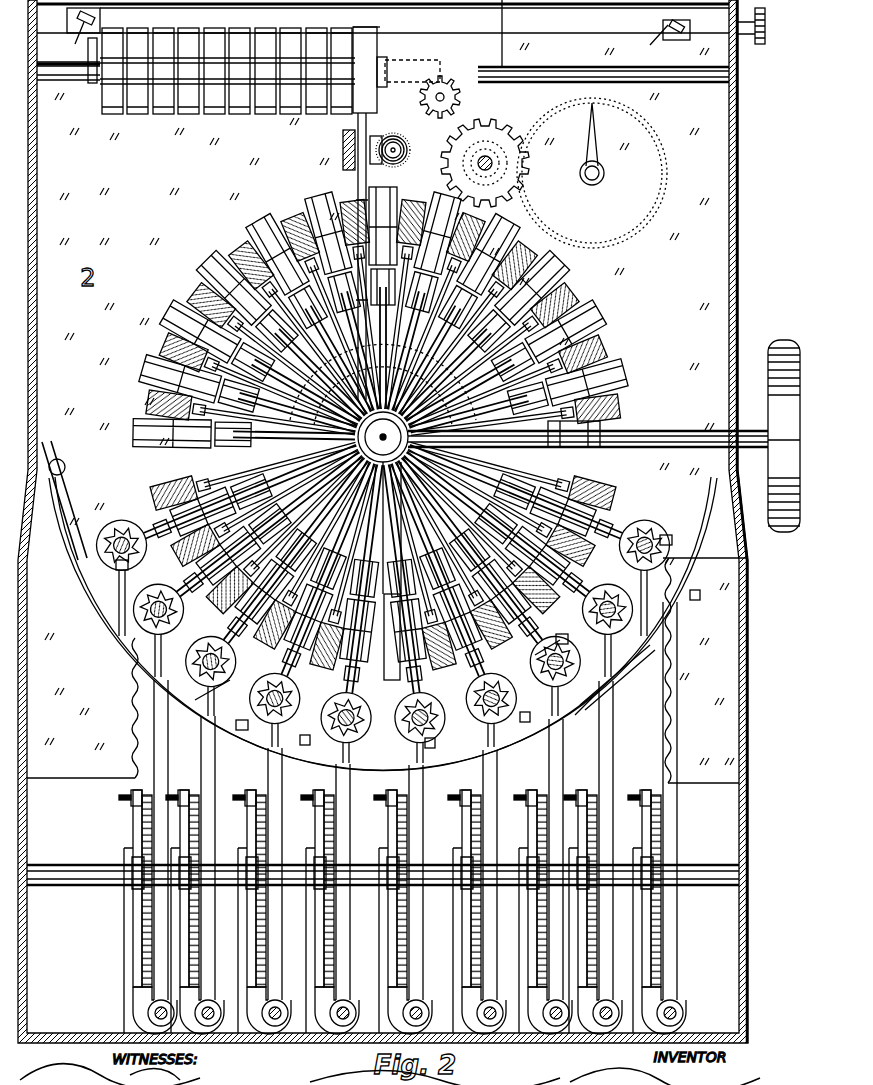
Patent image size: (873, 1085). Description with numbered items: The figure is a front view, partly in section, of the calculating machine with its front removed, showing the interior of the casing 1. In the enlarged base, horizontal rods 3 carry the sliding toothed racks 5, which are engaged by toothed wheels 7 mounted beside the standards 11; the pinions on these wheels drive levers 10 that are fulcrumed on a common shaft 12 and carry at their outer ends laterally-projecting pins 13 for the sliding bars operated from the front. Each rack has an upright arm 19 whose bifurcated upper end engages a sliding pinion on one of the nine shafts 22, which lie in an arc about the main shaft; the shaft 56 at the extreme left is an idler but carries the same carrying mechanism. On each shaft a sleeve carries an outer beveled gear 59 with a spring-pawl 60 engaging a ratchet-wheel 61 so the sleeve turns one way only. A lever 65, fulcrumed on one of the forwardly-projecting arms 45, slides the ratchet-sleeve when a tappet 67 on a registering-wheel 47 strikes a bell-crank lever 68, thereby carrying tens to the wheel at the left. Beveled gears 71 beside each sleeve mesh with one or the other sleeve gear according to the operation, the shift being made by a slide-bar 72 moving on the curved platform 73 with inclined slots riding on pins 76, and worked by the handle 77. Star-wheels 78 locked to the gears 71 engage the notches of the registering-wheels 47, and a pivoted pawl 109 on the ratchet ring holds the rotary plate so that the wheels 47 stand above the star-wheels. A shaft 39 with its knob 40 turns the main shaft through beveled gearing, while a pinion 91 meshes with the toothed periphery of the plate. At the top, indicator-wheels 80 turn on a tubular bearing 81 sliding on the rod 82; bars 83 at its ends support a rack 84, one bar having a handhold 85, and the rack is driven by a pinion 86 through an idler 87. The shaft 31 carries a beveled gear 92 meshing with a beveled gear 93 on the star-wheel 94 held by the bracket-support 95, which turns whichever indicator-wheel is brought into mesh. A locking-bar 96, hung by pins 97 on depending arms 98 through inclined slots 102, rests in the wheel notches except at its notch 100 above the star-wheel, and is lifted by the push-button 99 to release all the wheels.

The casing 1 is at (740, 222).
The horizontal rods 3 is at (410, 1012).
The toothed racks 5 is at (133, 1005).
The toothed wheels 7 is at (600, 858).
The levers 10 is at (590, 836).
The standards 11 is at (124, 1010).
The common shaft 12 is at (44, 888).
The laterally-projecting pins 13 is at (119, 800).
The upright arm 19 is at (600, 895).
The shafts 22 is at (195, 702).
The shaft 31 is at (400, 142).
The shaft 39 is at (670, 430).
The knob 40 is at (789, 340).
The forwardly-projecting arms 45 is at (245, 250).
The registering-wheels 47 is at (150, 380).
The idler shaft 56 is at (63, 548).
The outer beveled gear 59 is at (605, 694).
The spring-pawl 60 is at (570, 662).
The ratchet-wheel 61 is at (120, 568).
The lever 65 is at (332, 320).
The tappet 67 is at (395, 302).
The bell-crank levers 68 is at (508, 492).
The beveled gears 71 is at (504, 758).
The slide-bar 72 is at (118, 656).
The curved platform or shelf 73 is at (99, 626).
The pins or lugs 76 is at (130, 676).
The operating button or handle 77 is at (66, 467).
The star-wheels 78 is at (308, 744).
The indicator-wheels 80 is at (245, 112).
The tubular bearing 81 is at (262, 112).
The shaft or rod 82 is at (540, 67).
The bars 83 is at (388, 84).
The rack 84 is at (396, 72).
The handhold or extension 85 is at (92, 83).
The pinion 86 is at (462, 94).
The idler 87 is at (500, 124).
The pinion 91 is at (518, 178).
The beveled gear 92 is at (398, 168).
The beveled gear 93 is at (393, 134).
The star-wheel 94 is at (357, 180).
The bracket-support 95 is at (343, 142).
The locking-bar 96 is at (383, 20).
The pins 97 is at (365, 41).
The depending arms 98 is at (67, 18).
The push-button 99 is at (764, 26).
The notch or recess 100 is at (377, 27).
The inclined slots 102 is at (98, 18).
The pivoted pawl 109 is at (400, 340).